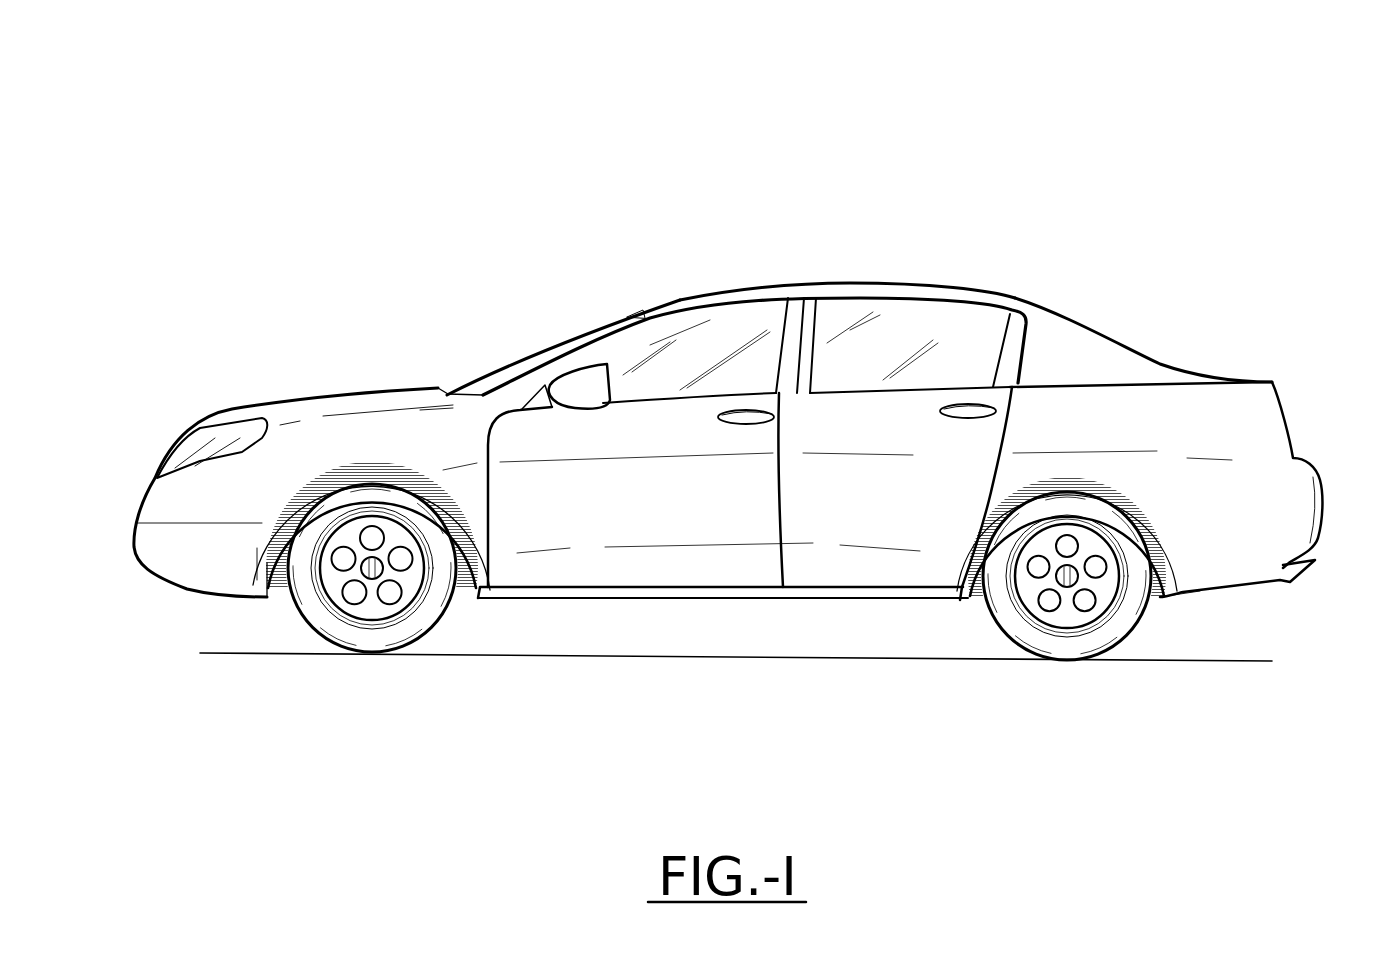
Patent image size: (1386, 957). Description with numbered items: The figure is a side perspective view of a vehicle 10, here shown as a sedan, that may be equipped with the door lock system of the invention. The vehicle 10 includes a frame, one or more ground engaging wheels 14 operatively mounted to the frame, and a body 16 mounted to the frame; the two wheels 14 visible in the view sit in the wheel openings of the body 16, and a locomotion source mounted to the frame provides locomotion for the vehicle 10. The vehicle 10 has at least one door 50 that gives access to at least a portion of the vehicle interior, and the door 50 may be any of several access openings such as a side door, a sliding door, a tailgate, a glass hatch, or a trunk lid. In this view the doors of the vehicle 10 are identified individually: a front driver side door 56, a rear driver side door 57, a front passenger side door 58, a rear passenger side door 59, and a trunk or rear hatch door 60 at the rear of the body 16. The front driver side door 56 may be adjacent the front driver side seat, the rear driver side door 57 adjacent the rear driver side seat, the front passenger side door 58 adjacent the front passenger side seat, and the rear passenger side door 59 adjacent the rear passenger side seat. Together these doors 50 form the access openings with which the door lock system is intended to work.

The vehicle 10 is at (1009, 212).
The ground engaging wheels 14 is at (400, 633).
The body 16 is at (1100, 345).
The door 50 is at (1227, 380).
The front driver side door 56 is at (613, 528).
The rear driver side door 57 is at (913, 552).
The front passenger side door 58 is at (657, 282).
The rear passenger side door 59 is at (851, 270).
The trunk or rear hatch door 60 is at (1187, 372).